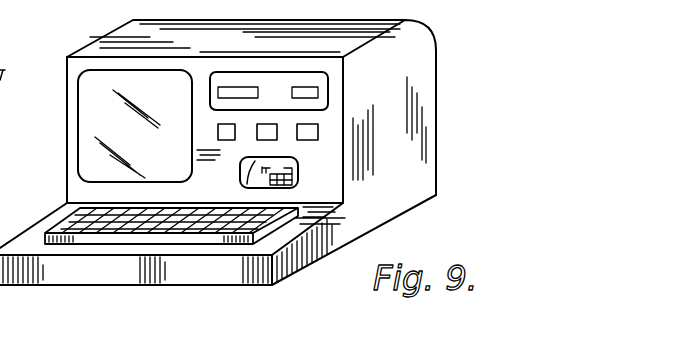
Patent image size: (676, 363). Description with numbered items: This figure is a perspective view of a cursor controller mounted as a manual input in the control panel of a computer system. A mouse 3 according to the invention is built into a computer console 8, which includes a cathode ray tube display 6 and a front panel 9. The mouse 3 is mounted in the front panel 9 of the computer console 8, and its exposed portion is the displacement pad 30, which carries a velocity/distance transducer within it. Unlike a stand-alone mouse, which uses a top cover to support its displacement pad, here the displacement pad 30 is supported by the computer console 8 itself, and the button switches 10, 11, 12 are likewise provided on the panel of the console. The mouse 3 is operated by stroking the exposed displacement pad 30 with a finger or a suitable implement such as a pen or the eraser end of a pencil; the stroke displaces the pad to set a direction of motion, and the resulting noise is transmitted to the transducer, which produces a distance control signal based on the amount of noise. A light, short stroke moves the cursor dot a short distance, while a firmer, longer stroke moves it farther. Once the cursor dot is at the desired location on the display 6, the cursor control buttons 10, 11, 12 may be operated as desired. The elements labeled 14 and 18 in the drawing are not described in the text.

The mouse 3 is at (312, 184).
The cathode ray tube display 6 is at (78, 117).
The computer console 8 is at (454, 76).
The front panel 9 is at (335, 88).
The button switch 10 is at (218, 132).
The button switch 11 is at (265, 124).
The button switch 12 is at (320, 130).
The keyboard 14 is at (98, 222).
The display window 18 is at (298, 165).
The displacement pad 30 is at (240, 175).